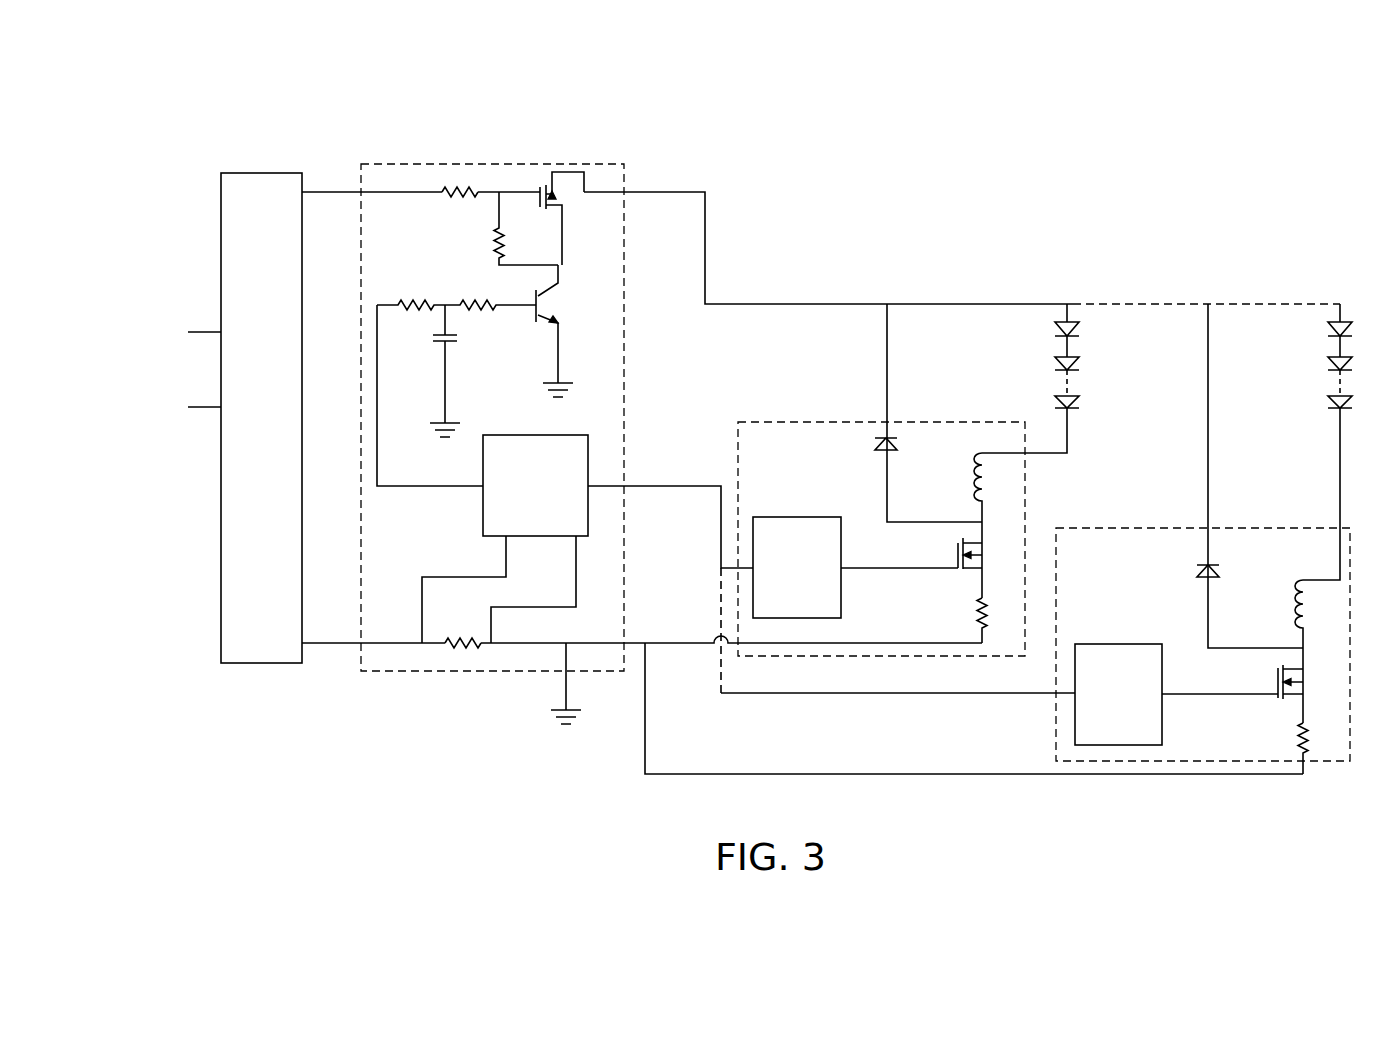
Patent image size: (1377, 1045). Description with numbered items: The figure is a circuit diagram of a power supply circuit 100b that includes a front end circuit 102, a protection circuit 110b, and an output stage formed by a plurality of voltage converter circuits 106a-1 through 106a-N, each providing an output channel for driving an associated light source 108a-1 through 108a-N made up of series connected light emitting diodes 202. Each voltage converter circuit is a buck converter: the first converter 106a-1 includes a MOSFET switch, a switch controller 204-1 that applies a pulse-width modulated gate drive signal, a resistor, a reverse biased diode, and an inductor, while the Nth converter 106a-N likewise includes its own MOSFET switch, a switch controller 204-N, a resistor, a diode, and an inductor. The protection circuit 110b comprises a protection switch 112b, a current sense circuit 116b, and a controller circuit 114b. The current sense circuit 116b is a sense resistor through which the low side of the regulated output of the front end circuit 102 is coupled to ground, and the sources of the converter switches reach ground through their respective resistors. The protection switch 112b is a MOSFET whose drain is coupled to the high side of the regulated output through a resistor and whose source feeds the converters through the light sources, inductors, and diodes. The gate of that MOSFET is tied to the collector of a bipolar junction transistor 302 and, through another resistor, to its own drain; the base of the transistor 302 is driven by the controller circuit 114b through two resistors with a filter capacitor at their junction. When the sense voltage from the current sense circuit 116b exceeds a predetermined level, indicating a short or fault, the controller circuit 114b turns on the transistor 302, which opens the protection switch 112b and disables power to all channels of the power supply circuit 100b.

The power supply circuit 100b is at (842, 86).
The front end circuit 102 is at (263, 173).
The protection circuit 110b is at (435, 163).
The protection switch 112b is at (594, 145).
The bipolar junction transistor 302 is at (594, 287).
The controller circuit 114b is at (586, 435).
The current sense circuit 116b is at (455, 691).
The voltage converter circuit 106a-1 is at (881, 480).
The voltage converter circuit 106a-N is at (1203, 539).
The light source 108a-1 is at (1005, 338).
The light source 108a-N is at (1288, 338).
The light emitting diode 202 is at (1075, 362).
The switch controller 204-1 is at (805, 539).
The switch controller 204-N is at (1090, 644).